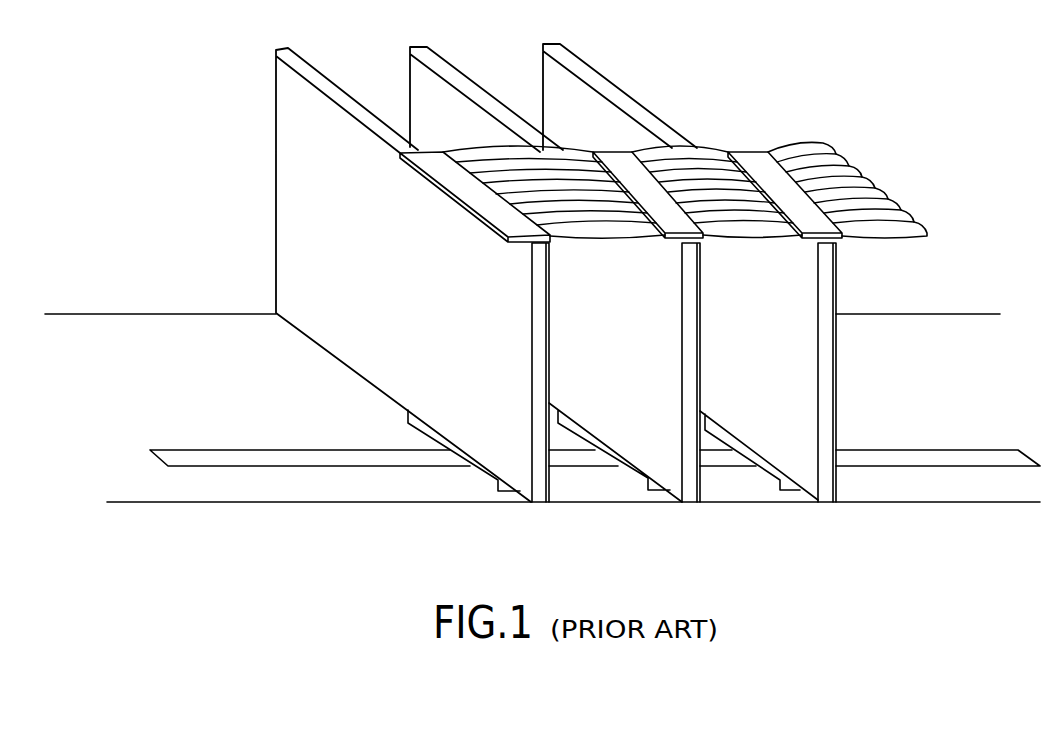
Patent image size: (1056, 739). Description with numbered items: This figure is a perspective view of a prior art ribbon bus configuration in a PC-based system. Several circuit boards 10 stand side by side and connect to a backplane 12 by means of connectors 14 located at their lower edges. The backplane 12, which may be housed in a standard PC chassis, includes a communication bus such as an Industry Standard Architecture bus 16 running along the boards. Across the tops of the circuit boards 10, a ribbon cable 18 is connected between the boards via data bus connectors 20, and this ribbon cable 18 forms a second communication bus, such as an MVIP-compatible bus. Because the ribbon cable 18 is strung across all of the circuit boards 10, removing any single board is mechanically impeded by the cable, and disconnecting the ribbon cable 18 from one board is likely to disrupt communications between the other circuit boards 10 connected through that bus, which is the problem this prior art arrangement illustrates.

The circuit board 10 is at (286, 102).
The backplane 12 is at (240, 381).
The connector 14 is at (480, 478).
The Industry Standard Architecture (ISA) bus 16 is at (193, 448).
The ribbon cable 18 is at (735, 226).
The data bus connector 20 is at (466, 194).